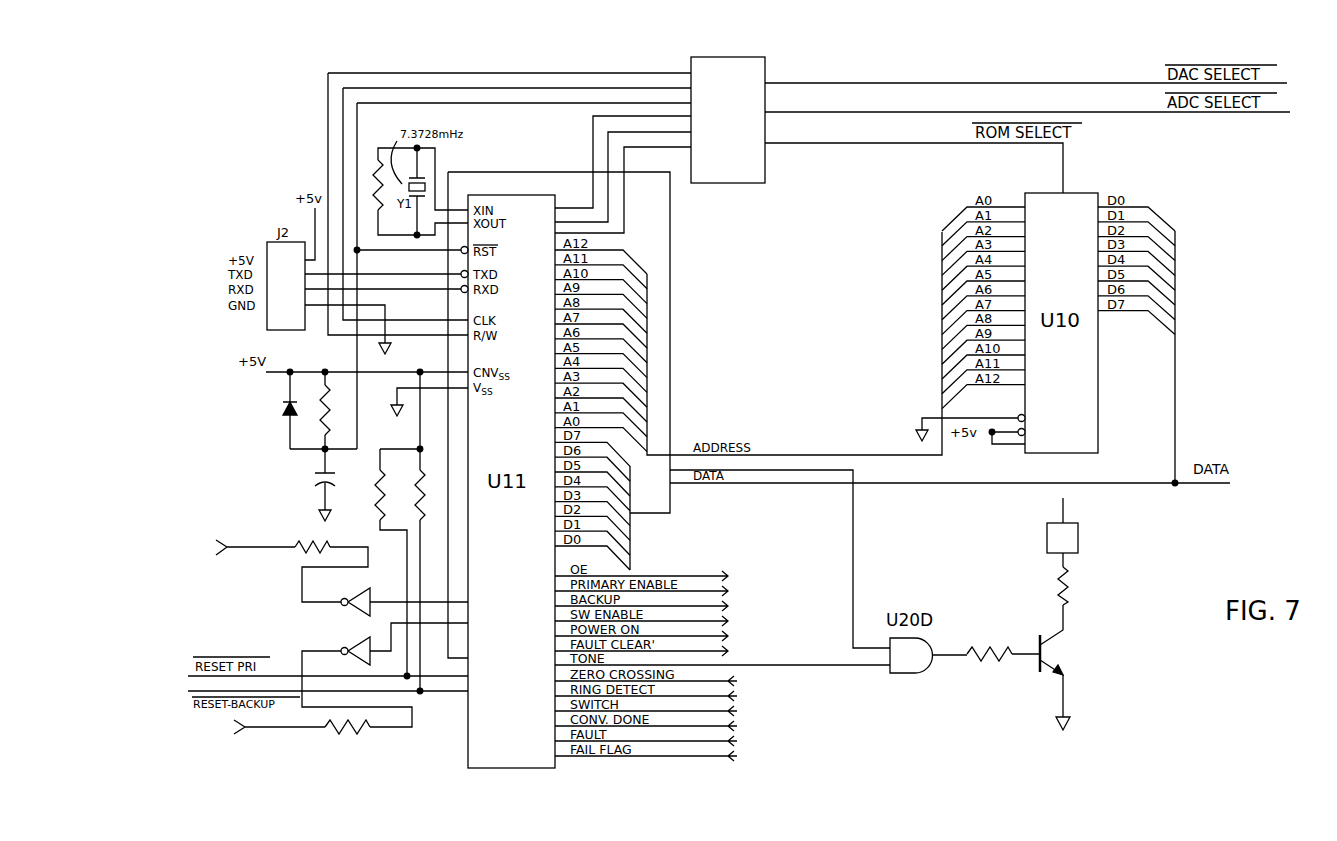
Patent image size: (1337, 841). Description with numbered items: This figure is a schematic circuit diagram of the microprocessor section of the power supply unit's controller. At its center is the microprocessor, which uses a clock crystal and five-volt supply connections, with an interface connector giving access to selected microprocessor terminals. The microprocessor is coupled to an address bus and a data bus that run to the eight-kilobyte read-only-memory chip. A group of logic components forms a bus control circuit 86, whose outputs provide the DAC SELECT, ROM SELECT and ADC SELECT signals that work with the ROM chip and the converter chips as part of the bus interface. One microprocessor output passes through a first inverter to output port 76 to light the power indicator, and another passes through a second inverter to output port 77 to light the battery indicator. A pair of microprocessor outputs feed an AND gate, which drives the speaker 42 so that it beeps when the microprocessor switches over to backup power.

The bus control circuit 86 is at (765, 65).
The output port 76 is at (235, 547).
The output port 77 is at (243, 730).
The speaker 42 is at (1078, 548).